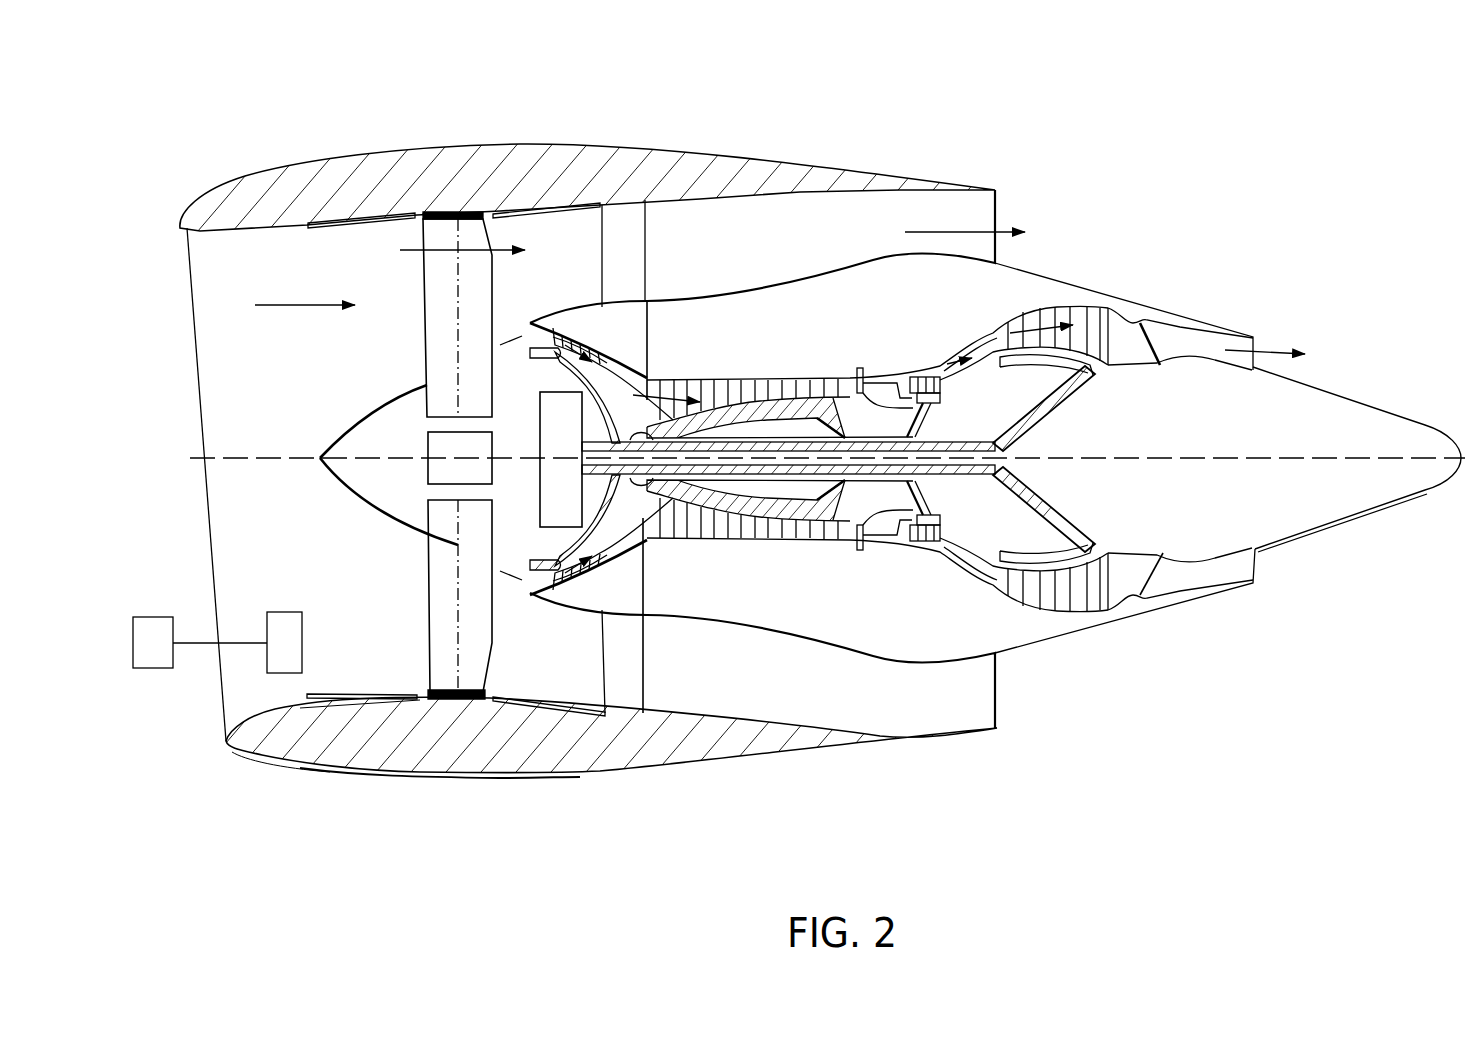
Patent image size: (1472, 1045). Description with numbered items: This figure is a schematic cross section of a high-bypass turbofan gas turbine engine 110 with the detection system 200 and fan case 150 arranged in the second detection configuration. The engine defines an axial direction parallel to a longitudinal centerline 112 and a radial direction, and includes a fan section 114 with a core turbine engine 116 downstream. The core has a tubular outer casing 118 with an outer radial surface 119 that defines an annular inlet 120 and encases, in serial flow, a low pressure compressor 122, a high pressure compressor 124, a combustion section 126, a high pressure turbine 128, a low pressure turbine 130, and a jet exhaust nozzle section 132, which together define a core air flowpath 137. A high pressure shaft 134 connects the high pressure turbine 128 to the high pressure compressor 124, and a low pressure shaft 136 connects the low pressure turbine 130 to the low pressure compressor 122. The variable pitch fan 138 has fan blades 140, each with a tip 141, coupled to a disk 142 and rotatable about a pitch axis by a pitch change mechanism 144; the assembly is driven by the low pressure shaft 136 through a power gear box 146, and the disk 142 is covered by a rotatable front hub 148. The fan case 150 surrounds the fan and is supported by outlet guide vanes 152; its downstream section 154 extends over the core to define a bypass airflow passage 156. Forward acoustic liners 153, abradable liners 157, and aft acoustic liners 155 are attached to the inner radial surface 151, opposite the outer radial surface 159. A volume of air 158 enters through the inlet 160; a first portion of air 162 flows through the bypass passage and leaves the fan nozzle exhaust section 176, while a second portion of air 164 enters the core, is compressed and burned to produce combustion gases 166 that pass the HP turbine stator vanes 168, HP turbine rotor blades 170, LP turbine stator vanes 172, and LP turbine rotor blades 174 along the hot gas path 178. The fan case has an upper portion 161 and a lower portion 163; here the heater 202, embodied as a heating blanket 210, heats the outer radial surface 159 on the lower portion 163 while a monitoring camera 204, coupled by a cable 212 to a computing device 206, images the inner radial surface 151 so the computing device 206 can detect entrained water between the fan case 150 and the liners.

The gas turbine engine 110 is at (978, 78).
The longitudinal centerline 112 is at (1172, 455).
The fan section 114 is at (328, 257).
The core turbine engine 116 is at (830, 317).
The outer casing 118 is at (825, 655).
The outer radial surface 119 is at (805, 272).
The annular inlet 120 is at (530, 583).
The low pressure compressor 122 is at (585, 566).
The high pressure compressor 124 is at (680, 534).
The combustion section 126 is at (872, 540).
The high pressure turbine 128 is at (955, 537).
The low pressure turbine 130 is at (1090, 603).
The jet exhaust nozzle section 132 is at (1155, 592).
The high pressure shaft 134 is at (927, 424).
The low pressure shaft 136 is at (1005, 440).
The core air flowpath 137 is at (618, 555).
The variable pitch fan 138 is at (376, 517).
The fan blades 140 is at (425, 622).
The tip 141 is at (462, 218).
The disk 142 is at (427, 404).
The pitch change mechanism 144 is at (425, 436).
The power gear box 146 is at (552, 404).
The front hub 148 is at (335, 478).
The fan case 150 is at (500, 790).
The inner radial surface 151 is at (775, 200).
The outlet guide vanes 152 is at (652, 248).
The forward acoustic liners 153 is at (375, 200).
The downstream section 154 is at (882, 186).
The aft acoustic liners 155 is at (560, 203).
The bypass airflow passage 156 is at (792, 254).
The abradable liners 157 is at (448, 212).
The volume of air 158 is at (300, 300).
The outer radial surface 159 is at (370, 790).
The inlet 160 is at (222, 726).
The upper portion 161 is at (213, 268).
The first portion of air 162 is at (425, 247).
The lower portion 163 is at (242, 612).
The second portion of air 164 is at (510, 330).
The combustion gases 166 is at (1020, 326).
The HP turbine stator vanes 168 is at (880, 552).
The HP turbine rotor blades 170 is at (930, 516).
The LP turbine stator vanes 172 is at (990, 596).
The LP turbine rotor blades 174 is at (1015, 605).
The fan nozzle exhaust section 176 is at (985, 212).
The hot gas path 178 is at (972, 332).
The detection system 200 is at (132, 588).
The heater 202 is at (270, 765).
The monitoring camera 204 is at (305, 655).
The computing device 206 is at (135, 672).
The heating blanket 210 is at (480, 782).
The cable 212 is at (200, 646).